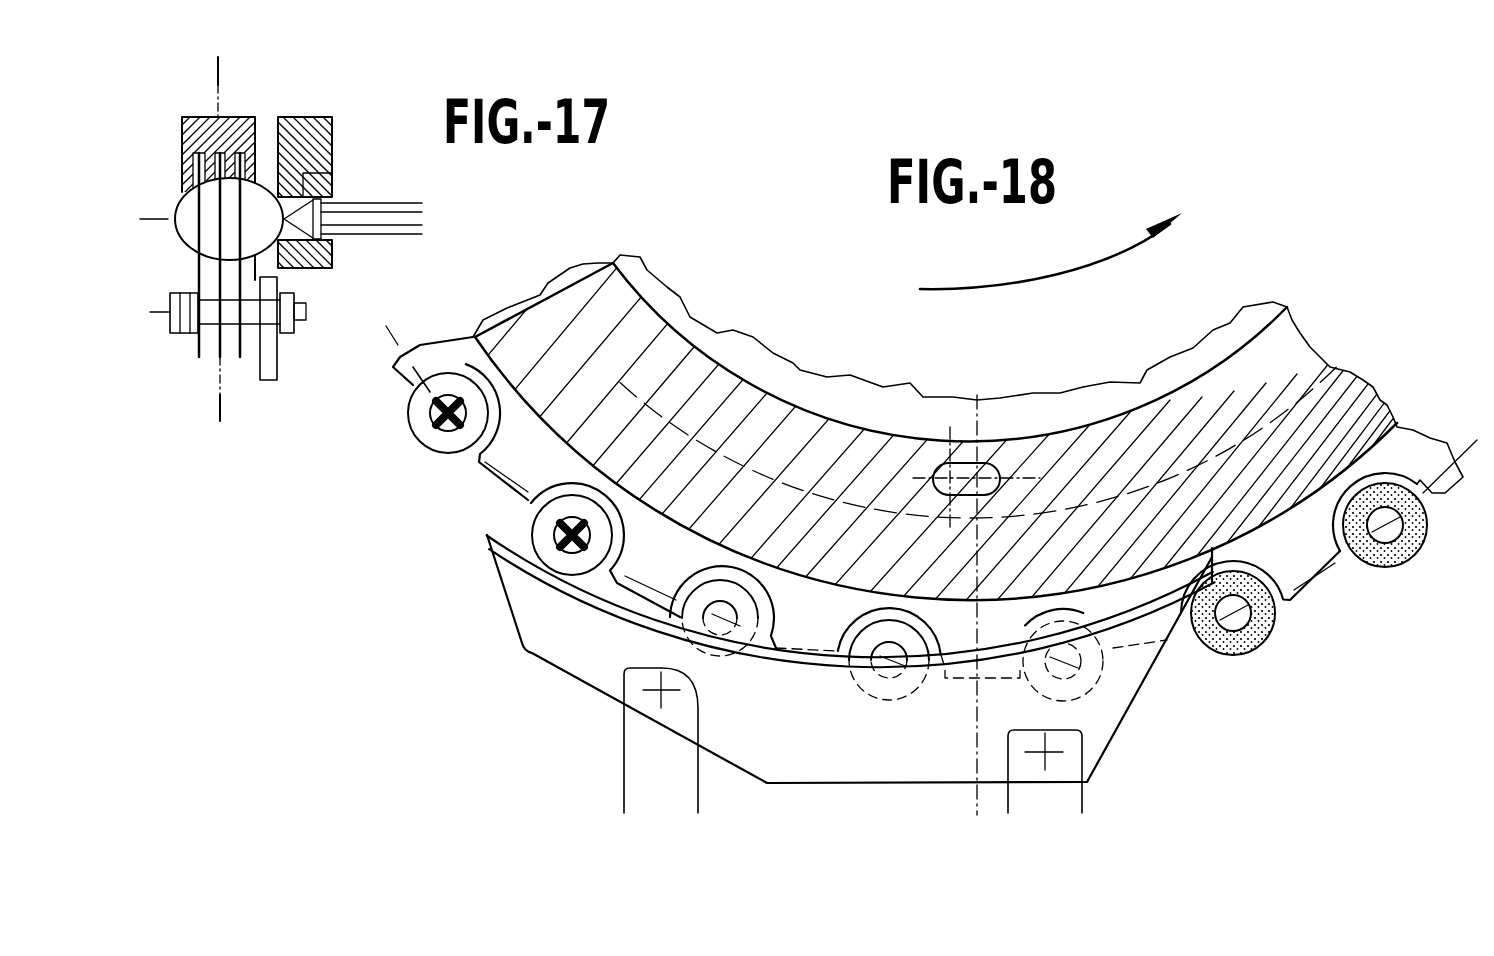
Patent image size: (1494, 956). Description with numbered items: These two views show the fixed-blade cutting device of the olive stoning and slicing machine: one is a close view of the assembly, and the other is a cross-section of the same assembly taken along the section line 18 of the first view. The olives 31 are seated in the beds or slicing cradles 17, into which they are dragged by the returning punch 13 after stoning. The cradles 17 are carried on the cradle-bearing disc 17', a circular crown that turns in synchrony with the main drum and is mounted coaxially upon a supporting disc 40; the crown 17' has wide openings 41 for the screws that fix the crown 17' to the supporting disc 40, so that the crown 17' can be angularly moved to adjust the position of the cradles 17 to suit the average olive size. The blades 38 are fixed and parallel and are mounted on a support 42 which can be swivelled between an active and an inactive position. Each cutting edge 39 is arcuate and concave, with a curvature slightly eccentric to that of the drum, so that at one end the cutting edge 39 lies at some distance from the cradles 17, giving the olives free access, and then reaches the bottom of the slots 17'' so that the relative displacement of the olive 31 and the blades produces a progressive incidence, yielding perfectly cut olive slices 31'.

In FIG. 17, the punch 13 is at (380, 228).
In FIG. 18, the punch 13 is at (430, 422).
In FIG. 17, the slicing cradle 17 is at (190, 195).
In FIG. 18, the slicing cradle 17 is at (366, 513).
In FIG. 18, the cradle-bearing disc 17' is at (968, 369).
In FIG. 17, the slot 17'' is at (237, 112).
In FIG. 18, the slot 17'' is at (885, 468).
In FIG. 17, the section line 18— 18 is at (238, 72).
In FIG. 17, the stoned olive 31 is at (278, 175).
In FIG. 18, the stoned olive 31 is at (702, 537).
In FIG. 18, the olive slice 31' is at (1309, 616).
In FIG. 17, the blade 38 is at (197, 270).
In FIG. 18, the blade 38 is at (555, 648).
In FIG. 18, the cutting edge 39 is at (533, 565).
In FIG. 18, the supporting disc 40 is at (793, 388).
In FIG. 18, the wide opening 41 is at (957, 467).
In FIG. 17, the support 42 is at (270, 357).
In FIG. 18, the support 42 is at (643, 770).